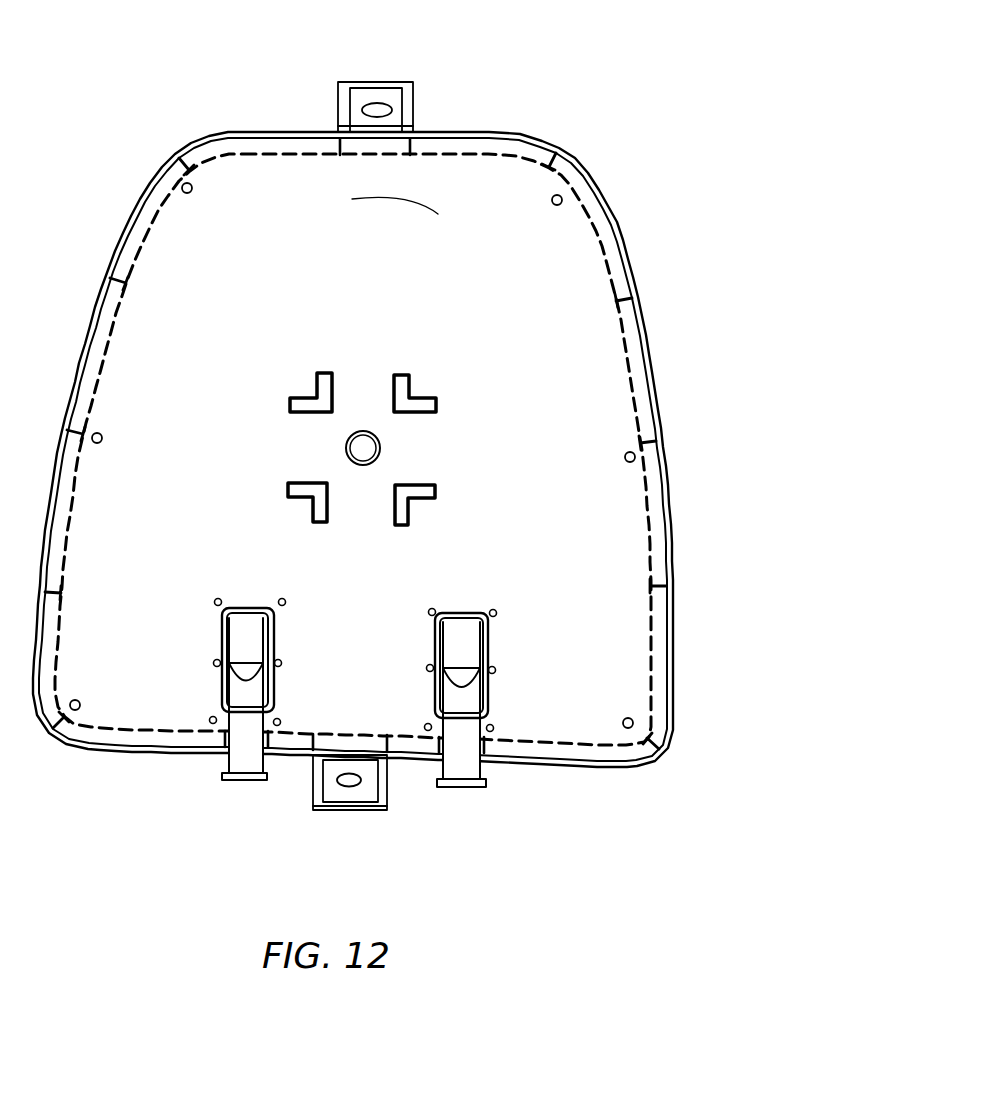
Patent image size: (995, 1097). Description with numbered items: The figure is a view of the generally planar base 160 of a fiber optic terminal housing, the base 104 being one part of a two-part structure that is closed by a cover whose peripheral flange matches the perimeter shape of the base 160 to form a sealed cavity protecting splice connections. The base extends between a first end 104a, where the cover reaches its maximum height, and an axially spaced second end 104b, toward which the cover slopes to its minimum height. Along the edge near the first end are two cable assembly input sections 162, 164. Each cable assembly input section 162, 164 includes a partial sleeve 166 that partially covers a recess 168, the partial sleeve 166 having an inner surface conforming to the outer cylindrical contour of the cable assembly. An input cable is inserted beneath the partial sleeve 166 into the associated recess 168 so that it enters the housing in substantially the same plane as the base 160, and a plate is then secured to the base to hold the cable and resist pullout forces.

The base 160 is at (409, 455).
The base 104 is at (409, 455).
The first end 104a is at (577, 767).
The second end 104b is at (266, 128).
The cable assembly input section 162 is at (193, 802).
The cable assembly input section 164 is at (473, 823).
The partial sleeve 166 is at (243, 723).
The recess 168 is at (240, 622).